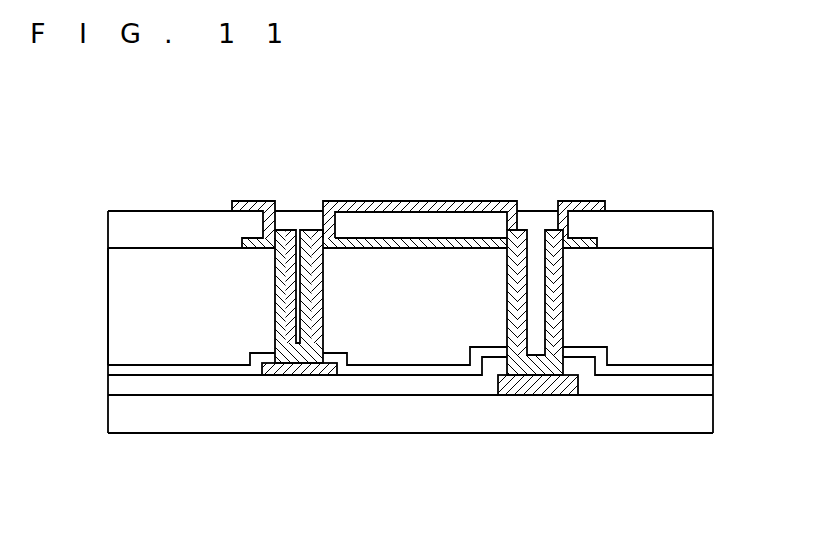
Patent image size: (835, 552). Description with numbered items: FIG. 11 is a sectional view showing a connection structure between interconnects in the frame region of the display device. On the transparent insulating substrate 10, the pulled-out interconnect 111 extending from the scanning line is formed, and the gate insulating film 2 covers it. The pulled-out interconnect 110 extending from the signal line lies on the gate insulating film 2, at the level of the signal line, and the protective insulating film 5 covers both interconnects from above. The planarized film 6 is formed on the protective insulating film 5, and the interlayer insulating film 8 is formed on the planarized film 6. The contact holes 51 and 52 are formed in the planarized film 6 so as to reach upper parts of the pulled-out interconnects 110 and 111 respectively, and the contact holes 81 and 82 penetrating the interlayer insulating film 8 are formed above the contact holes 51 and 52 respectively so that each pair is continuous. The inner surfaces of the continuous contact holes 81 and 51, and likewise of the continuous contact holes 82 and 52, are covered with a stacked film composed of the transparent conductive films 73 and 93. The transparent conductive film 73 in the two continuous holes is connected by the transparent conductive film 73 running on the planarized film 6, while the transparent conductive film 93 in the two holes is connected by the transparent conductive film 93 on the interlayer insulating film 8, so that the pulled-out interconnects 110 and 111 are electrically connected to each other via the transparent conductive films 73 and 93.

The gate insulating film 2 is at (708, 383).
The protective insulating film 5 is at (708, 370).
The planarized film 6 is at (708, 299).
The interlayer insulating film 8 is at (708, 236).
The transparent insulating substrate 10 is at (708, 418).
The contact hole 51 is at (322, 357).
The contact hole 52 is at (563, 363).
The transparent conductive film 73 is at (413, 243).
The contact hole 81 is at (338, 233).
The contact hole 82 is at (566, 232).
The transparent conductive film 93 is at (479, 206).
The pulled-out interconnect 110 is at (290, 367).
The pulled-out interconnect 111 is at (541, 380).